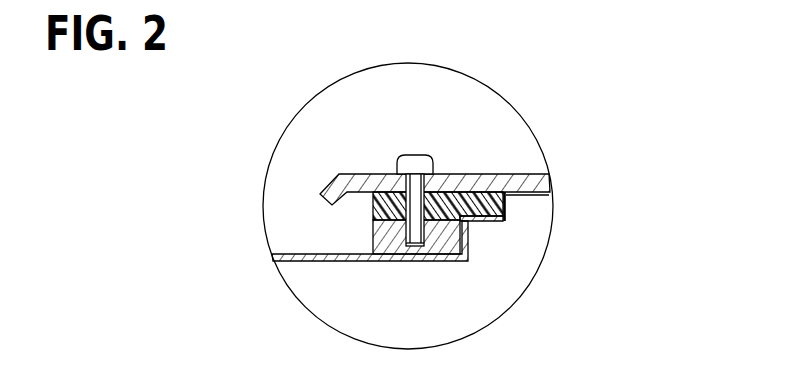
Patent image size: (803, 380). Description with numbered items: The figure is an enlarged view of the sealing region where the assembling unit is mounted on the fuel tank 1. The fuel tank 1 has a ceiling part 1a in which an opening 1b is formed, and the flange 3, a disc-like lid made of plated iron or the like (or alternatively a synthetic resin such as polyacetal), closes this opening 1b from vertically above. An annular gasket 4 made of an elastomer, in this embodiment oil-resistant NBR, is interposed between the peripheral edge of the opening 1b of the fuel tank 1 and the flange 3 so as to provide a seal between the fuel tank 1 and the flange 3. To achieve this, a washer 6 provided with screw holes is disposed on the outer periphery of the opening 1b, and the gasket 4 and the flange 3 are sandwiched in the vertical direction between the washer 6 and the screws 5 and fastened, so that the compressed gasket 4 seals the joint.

The fuel tank 1 is at (439, 269).
The ceiling part 1a is at (300, 262).
The opening 1b is at (506, 218).
The flange 3 is at (477, 174).
The gasket 4 is at (505, 201).
The screws 5 is at (414, 155).
The washer 6 is at (373, 234).